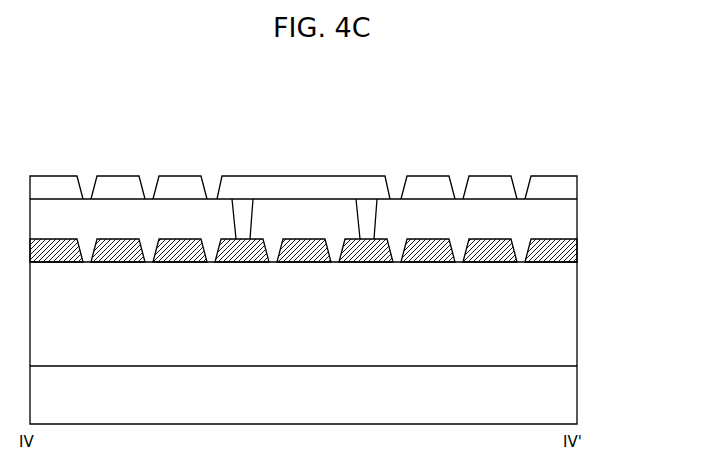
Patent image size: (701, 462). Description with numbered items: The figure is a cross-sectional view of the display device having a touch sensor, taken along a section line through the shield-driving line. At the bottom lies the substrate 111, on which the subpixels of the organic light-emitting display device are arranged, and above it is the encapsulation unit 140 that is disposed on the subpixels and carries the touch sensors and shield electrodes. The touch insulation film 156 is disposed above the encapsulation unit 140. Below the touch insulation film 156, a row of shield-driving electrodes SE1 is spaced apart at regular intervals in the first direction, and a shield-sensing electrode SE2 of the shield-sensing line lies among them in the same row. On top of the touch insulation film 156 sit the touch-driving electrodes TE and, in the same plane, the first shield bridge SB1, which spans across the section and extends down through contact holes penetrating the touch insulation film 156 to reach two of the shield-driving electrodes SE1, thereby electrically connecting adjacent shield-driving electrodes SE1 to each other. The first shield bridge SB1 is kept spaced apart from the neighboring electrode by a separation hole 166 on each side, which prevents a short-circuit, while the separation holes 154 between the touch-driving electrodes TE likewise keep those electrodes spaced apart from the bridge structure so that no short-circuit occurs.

The substrate 111 is at (570, 395).
The encapsulation unit 140 is at (570, 327).
The touch insulation film 156 is at (570, 217).
The separation hole 154 is at (89, 191).
The separation hole 166 is at (211, 191).
The touch-driving electrode TE is at (50, 175).
The first shield bridge SB1 is at (306, 175).
The shield-driving electrode SE1 is at (50, 264).
The shield-sensing electrode SE2 is at (299, 264).